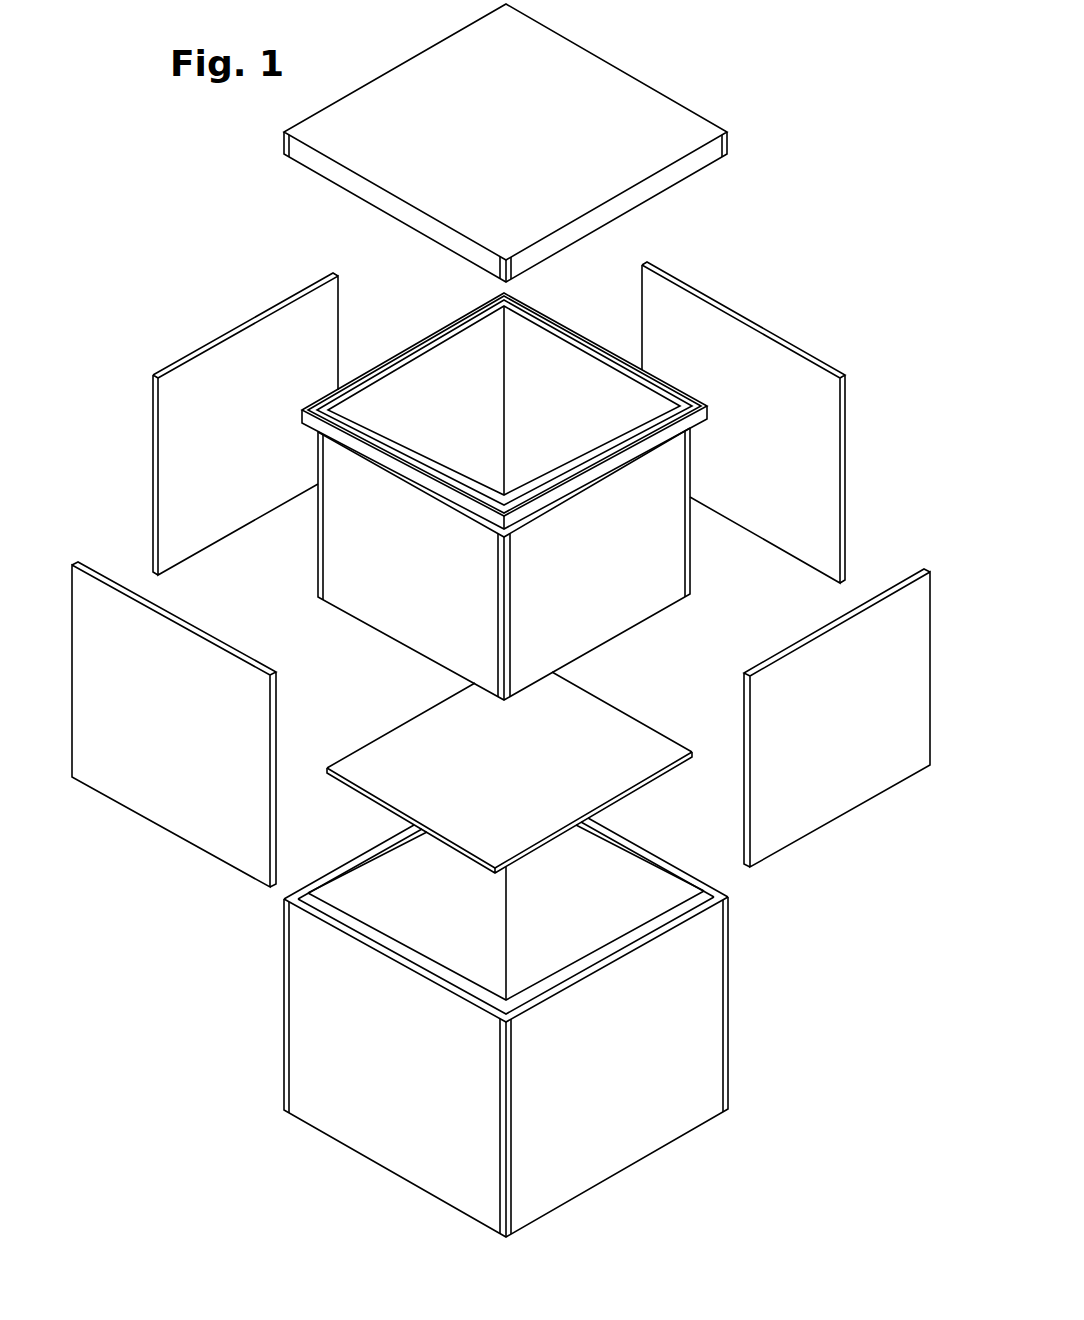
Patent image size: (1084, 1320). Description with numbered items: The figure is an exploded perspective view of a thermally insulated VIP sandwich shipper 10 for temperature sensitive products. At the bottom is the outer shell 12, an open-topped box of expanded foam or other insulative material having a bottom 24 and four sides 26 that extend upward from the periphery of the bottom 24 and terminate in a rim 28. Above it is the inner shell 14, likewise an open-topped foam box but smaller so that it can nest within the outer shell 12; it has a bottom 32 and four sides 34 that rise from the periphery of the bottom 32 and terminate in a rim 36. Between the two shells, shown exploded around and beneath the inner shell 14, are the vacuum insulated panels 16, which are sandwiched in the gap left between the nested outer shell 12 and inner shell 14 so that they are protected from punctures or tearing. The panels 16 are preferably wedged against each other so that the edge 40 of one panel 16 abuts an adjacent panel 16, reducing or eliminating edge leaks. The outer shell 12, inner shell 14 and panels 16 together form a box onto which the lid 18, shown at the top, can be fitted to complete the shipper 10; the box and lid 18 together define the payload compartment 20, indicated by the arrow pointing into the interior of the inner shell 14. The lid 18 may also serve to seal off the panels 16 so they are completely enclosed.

The thermally insulated VIP sandwich shipper 10 is at (855, 153).
The outer shell 12 is at (527, 1018).
The inner shell 14 is at (520, 480).
The vacuum insulated panels 16 is at (500, 582).
The lid 18 is at (731, 139).
The payload compartment 20 is at (522, 360).
The bottom of outer shell 24 is at (512, 989).
The sides of outer shell 26 is at (344, 895).
The rim of outer shell 28 is at (391, 933).
The bottom of inner shell 32 is at (500, 490).
The sides of inner shell 34 is at (432, 372).
The rim of inner shell 36 is at (402, 442).
The edge of VIP panel 40 is at (153, 450).